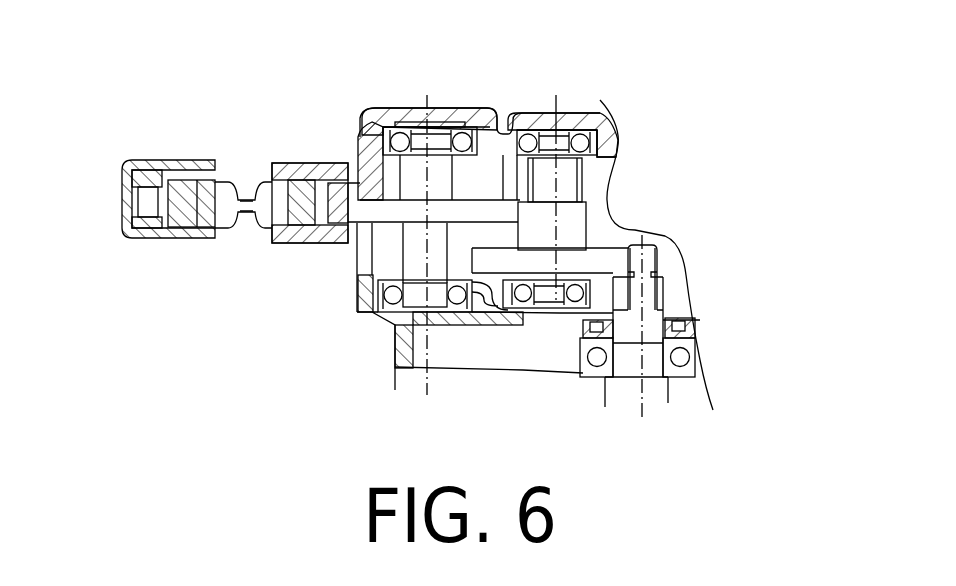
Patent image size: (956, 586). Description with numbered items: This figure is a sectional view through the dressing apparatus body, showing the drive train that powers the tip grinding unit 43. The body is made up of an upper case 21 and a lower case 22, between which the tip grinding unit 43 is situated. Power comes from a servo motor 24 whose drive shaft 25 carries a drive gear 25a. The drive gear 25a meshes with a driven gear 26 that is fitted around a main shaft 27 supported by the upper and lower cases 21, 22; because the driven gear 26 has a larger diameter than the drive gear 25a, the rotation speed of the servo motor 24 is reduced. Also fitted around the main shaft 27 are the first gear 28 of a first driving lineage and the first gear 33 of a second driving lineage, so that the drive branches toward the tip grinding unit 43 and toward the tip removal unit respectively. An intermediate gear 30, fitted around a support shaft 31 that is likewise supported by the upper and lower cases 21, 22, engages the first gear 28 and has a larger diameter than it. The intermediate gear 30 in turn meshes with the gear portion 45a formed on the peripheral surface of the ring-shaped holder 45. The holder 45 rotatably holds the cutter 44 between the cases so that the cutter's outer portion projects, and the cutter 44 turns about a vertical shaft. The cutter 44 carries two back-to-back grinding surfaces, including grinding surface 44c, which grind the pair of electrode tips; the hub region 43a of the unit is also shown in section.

The upper case 21 is at (358, 123).
The lower case 22 is at (358, 248).
The servo motor 24 is at (702, 392).
The drive shaft 25 is at (648, 347).
The drive gear 25a is at (656, 263).
The driven gear 26 is at (610, 257).
The main shaft 27 is at (513, 310).
The first gear of first driving lineage 28 is at (587, 217).
The intermediate gear 30 is at (357, 172).
The support shaft 31 is at (430, 304).
The first gear of second driving lineage 33 is at (500, 133).
The tip grinding unit 43 is at (193, 148).
The clutch hub 43a is at (245, 165).
The cutter 44 is at (231, 232).
The grinding surface 44c is at (254, 232).
The ring-shaped holder 45 is at (182, 240).
The gear portion 45a is at (145, 240).